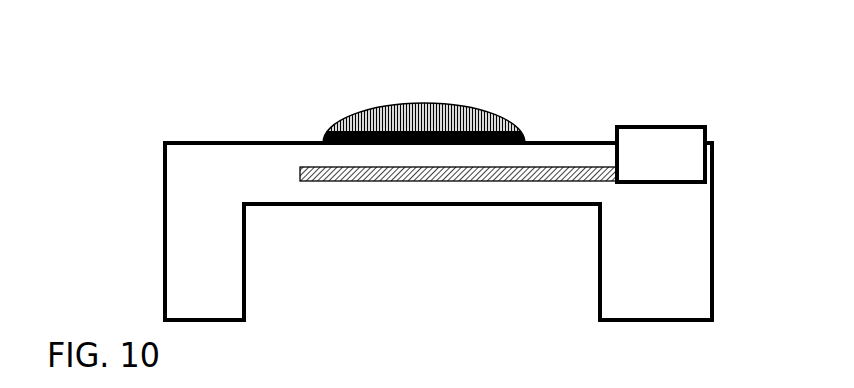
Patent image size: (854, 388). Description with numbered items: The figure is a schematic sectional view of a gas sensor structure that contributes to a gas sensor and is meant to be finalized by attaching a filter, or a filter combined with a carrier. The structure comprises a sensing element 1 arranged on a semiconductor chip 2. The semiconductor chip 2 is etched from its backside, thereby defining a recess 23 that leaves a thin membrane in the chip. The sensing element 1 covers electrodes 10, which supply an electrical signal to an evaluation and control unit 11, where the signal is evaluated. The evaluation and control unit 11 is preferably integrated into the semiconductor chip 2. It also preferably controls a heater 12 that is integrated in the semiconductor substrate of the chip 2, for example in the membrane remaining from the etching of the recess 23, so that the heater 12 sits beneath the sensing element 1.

The sensing element 1 is at (458, 163).
The semiconductor chip 2 is at (164, 290).
The electrodes 10 is at (343, 112).
The evaluation and control unit 11 is at (660, 142).
The heater 12 is at (522, 181).
The recess 23 is at (422, 262).